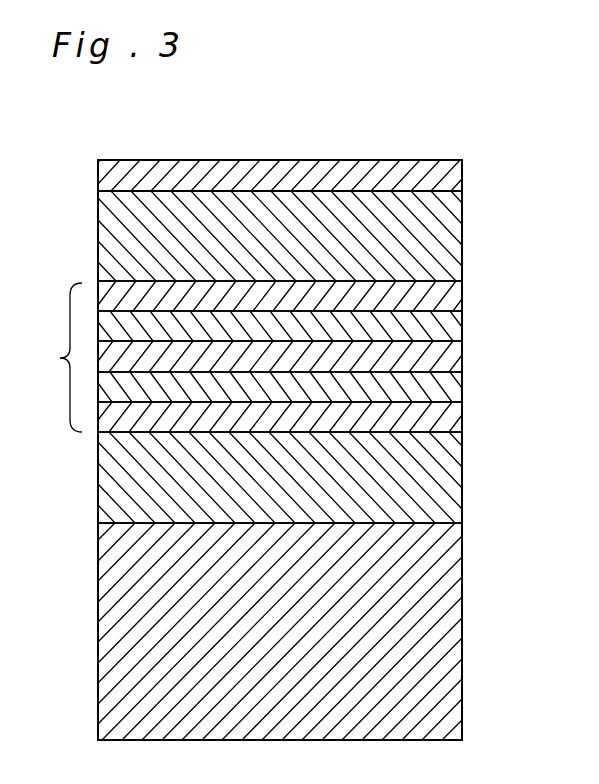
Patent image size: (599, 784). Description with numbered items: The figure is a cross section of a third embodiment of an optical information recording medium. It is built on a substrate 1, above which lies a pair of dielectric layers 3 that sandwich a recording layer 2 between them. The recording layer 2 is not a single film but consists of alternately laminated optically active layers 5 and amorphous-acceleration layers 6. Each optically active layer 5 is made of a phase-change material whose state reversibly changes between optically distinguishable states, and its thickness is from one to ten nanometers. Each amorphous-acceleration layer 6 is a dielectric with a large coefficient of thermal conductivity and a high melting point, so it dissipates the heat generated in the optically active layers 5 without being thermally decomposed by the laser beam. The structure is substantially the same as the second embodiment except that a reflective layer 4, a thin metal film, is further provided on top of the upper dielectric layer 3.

The substrate 1 is at (442, 647).
The recording layer 2 is at (245, 356).
The dielectric layer 3 is at (430, 233).
The reflective layer 4 is at (415, 173).
The optically active layer 5 is at (450, 300).
The amorphous-acceleration layer 6 is at (445, 330).